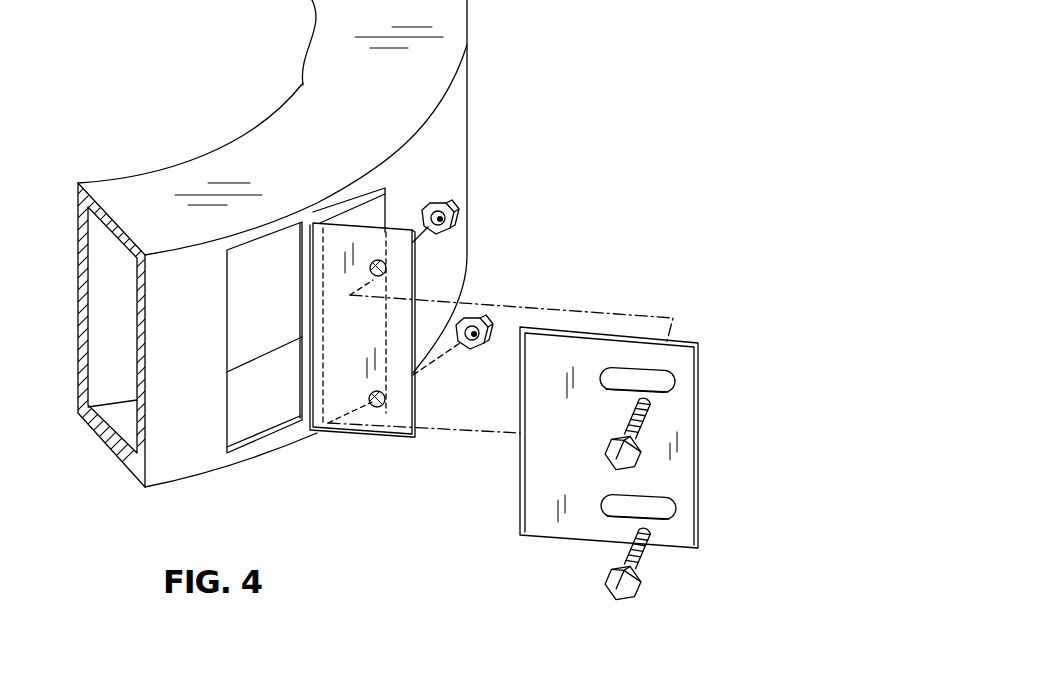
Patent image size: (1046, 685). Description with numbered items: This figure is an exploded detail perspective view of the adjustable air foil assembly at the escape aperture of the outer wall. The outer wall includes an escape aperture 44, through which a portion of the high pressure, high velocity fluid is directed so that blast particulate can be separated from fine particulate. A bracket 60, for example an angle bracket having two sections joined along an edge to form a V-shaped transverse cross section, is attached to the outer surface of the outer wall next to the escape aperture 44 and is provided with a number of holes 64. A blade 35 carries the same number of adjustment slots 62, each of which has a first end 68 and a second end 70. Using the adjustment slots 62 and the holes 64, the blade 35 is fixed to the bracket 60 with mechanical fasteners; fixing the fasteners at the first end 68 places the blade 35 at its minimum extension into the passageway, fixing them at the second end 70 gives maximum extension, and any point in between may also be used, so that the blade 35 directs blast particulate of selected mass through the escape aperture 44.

The blade 35 is at (571, 450).
The escape aperture 44 is at (281, 381).
The bracket 60 is at (366, 339).
The adjustment slots 62 is at (674, 380).
The holes 64 is at (377, 261).
The first end 68 is at (618, 362).
The second end 70 is at (670, 367).